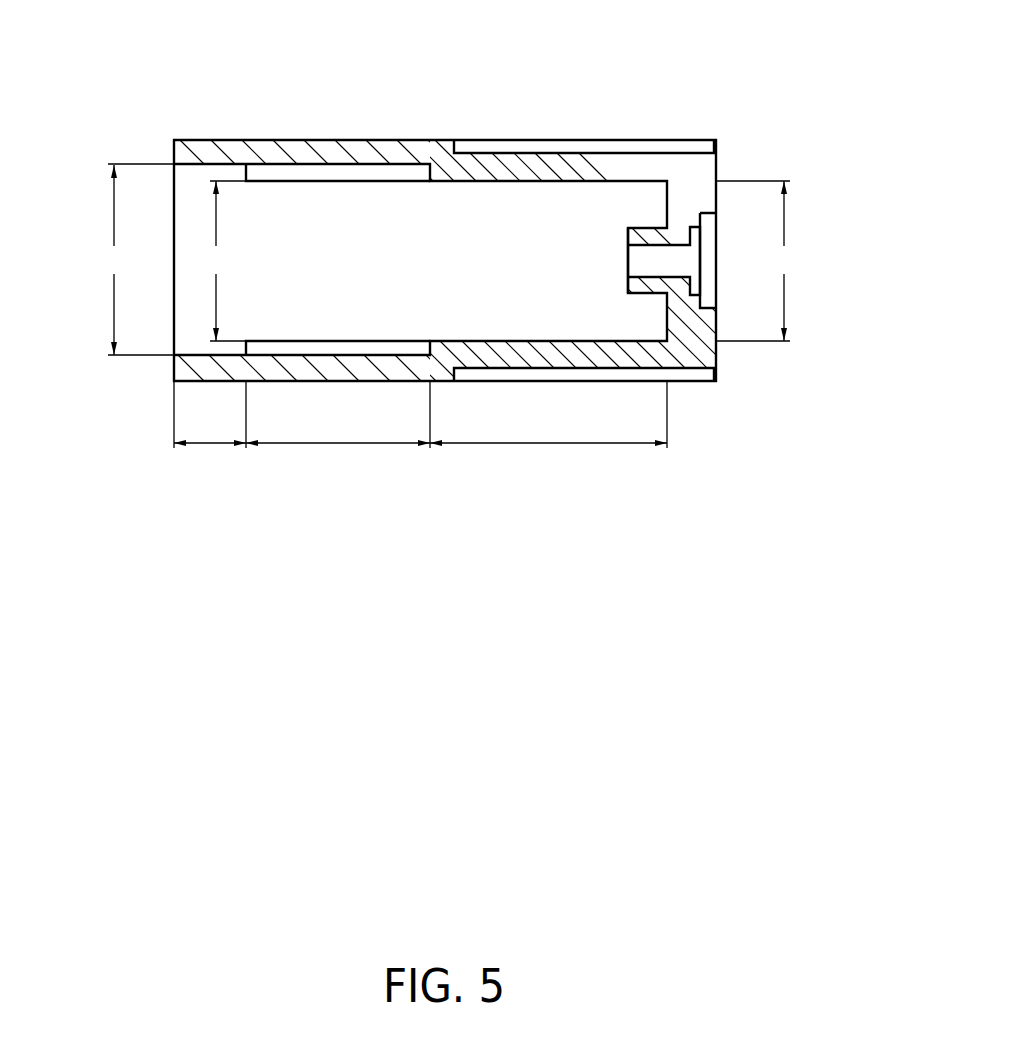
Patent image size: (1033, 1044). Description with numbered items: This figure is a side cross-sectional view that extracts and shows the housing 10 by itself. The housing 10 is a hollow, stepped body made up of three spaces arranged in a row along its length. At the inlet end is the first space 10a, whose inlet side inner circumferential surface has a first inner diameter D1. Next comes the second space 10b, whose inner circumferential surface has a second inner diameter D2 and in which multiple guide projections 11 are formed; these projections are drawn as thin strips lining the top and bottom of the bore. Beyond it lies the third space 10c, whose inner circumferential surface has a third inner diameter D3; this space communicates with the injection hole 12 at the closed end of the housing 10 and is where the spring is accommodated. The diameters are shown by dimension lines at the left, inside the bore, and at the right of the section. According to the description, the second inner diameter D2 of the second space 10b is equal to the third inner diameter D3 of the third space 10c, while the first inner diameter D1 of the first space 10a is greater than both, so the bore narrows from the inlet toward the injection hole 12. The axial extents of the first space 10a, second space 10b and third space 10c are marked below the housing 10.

The housing 10 is at (411, 127).
The guide projections 11 is at (330, 345).
The injection hole 12 is at (663, 258).
The first space 10a is at (210, 432).
The second space 10b is at (338, 432).
The third space 10c is at (548, 432).
The first inner diameter D1 is at (135, 259).
The second inner diameter D2 is at (223, 261).
The third inner diameter D3 is at (758, 261).